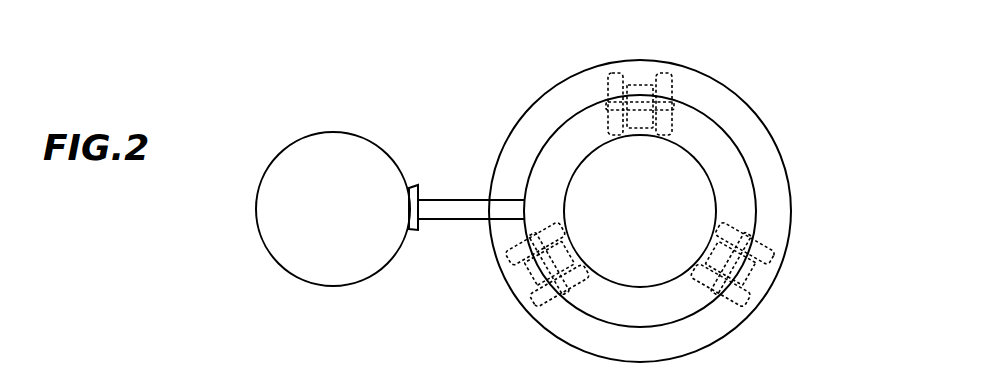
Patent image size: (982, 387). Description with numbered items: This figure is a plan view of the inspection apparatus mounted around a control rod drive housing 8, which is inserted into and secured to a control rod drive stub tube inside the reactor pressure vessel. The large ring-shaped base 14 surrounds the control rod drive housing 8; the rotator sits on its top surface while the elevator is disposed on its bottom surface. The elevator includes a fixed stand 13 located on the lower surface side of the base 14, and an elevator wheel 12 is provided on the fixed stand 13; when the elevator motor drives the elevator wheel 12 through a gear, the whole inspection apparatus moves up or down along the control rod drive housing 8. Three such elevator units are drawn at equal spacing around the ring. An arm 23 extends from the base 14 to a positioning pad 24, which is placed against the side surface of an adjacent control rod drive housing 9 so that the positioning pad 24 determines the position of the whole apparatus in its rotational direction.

The control rod drive housing 8 is at (670, 200).
The control rod drive housing 9 is at (333, 160).
The elevator wheel 12 is at (675, 90).
The fixed stand 13 is at (643, 83).
The base 14 is at (768, 130).
The arm 23 is at (457, 207).
The positioning pad 24 is at (415, 230).